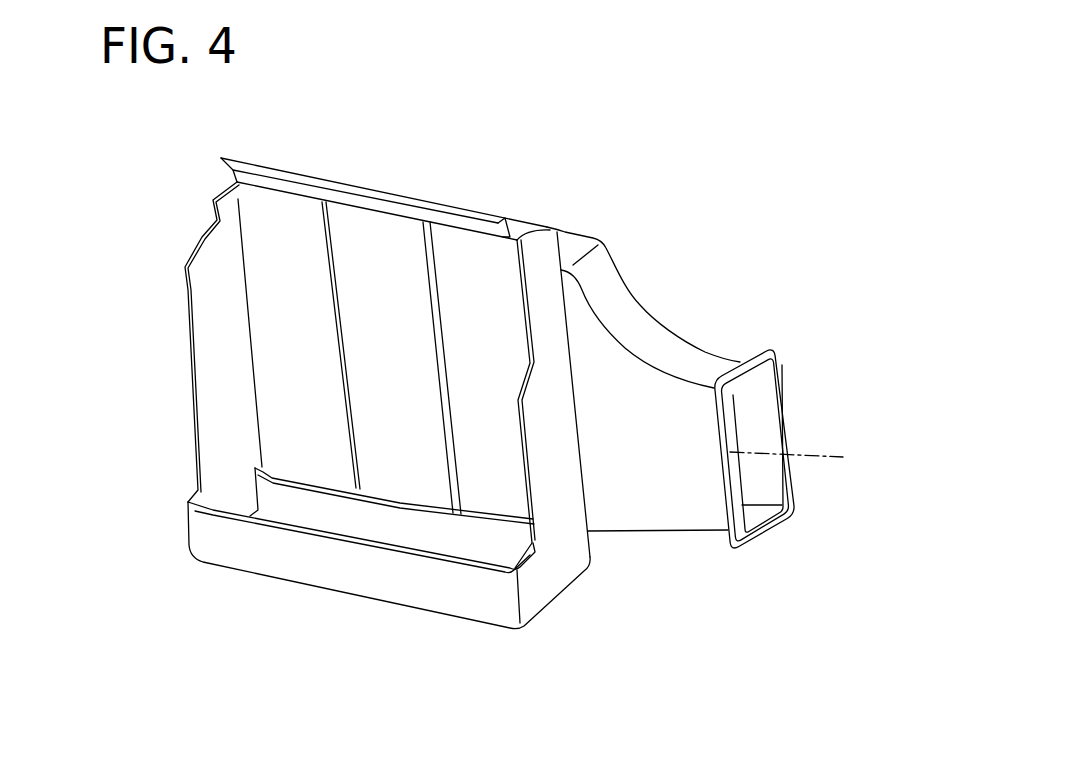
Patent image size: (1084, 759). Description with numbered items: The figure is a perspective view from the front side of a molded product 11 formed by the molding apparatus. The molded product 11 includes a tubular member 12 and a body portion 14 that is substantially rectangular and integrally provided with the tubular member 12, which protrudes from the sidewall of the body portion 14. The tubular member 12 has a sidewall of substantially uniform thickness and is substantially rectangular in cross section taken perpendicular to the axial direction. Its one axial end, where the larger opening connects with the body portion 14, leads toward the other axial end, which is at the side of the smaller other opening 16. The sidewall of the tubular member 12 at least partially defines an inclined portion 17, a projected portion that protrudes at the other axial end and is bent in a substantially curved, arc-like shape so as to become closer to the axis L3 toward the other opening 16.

The molded product 11 is at (544, 406).
The tubular member 12 is at (783, 527).
The body portion 14 is at (343, 585).
The other opening 16 is at (787, 484).
The inclined portion 17 is at (640, 303).
The axis L3 is at (818, 455).